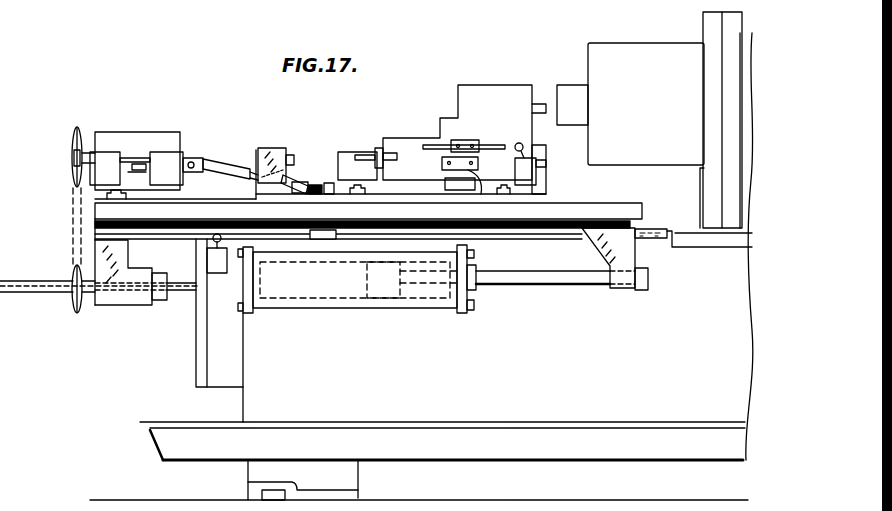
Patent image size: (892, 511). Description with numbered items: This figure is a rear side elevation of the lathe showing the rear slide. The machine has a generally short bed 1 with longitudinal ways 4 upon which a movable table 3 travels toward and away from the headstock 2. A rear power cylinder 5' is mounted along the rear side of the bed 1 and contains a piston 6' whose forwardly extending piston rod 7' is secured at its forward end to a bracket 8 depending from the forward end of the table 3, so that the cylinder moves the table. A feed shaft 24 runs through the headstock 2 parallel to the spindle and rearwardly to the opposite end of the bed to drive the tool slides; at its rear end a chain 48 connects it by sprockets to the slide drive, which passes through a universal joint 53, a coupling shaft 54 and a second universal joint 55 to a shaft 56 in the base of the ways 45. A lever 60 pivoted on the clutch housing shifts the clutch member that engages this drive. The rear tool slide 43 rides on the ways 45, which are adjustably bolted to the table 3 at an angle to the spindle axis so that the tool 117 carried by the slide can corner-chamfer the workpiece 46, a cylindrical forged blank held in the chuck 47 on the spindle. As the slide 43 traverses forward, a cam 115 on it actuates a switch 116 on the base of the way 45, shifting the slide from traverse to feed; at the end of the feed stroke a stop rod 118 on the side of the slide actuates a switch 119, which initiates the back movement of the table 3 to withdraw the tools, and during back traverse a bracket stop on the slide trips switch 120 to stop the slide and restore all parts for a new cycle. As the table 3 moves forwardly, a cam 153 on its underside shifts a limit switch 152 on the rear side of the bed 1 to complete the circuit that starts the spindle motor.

The bed 1 is at (688, 250).
The headstock 2 is at (738, 92).
The table 3 is at (603, 203).
The longitudinal ways 4 is at (654, 223).
The power cylinder 5' is at (356, 289).
The piston 6' is at (411, 302).
The piston rod 7' is at (551, 297).
The bracket 8 is at (624, 288).
The feed shaft 24 is at (53, 291).
The rear tool slide 43 is at (411, 131).
The ways 45 is at (350, 146).
The workpiece 46 is at (570, 77).
The chuck 47 is at (611, 41).
The chain 48 is at (72, 216).
The universal joint 53 is at (194, 157).
The coupling shaft 54 is at (233, 162).
The universal joint 55 is at (317, 194).
The shaft 56 is at (327, 182).
The lever 60 is at (139, 157).
The cam 115 is at (480, 186).
The switch 116 is at (460, 183).
The tool 117 is at (543, 98).
The stop rod 118 is at (485, 145).
The switch 119 is at (537, 168).
The switch 120 is at (281, 144).
The limit switch 152 is at (214, 262).
The cam 153 is at (318, 239).